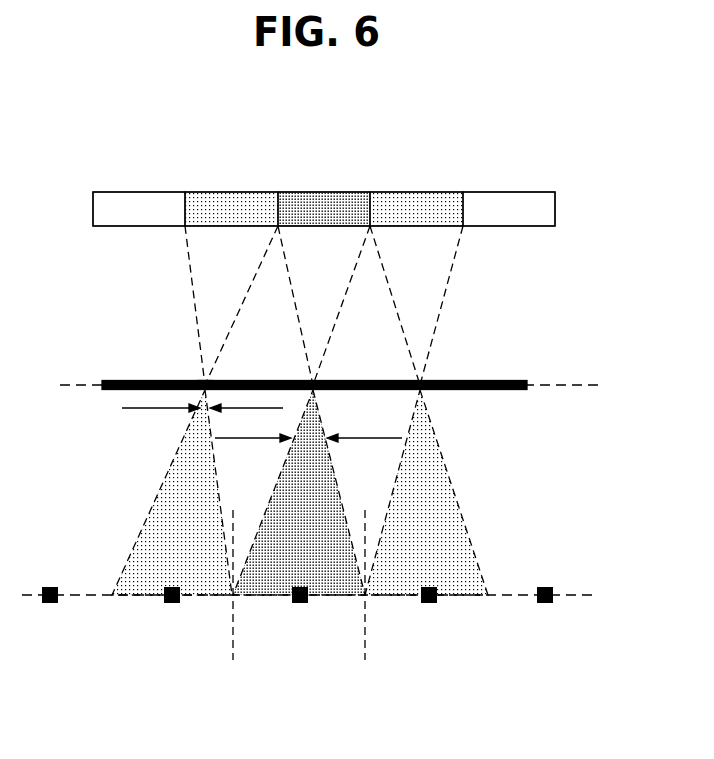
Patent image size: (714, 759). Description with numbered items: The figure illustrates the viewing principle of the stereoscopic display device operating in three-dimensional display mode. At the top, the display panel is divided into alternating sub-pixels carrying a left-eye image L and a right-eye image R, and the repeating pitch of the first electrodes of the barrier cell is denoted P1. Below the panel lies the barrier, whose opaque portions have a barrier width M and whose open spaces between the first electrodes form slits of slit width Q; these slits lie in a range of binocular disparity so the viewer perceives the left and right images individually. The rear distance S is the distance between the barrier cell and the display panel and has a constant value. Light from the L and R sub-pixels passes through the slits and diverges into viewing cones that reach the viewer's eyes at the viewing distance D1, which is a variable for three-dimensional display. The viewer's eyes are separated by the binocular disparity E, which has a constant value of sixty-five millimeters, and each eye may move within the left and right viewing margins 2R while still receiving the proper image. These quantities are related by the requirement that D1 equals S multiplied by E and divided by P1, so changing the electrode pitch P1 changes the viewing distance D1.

The pitch of the first electrodes P1 is at (324, 192).
The left-eye image L is at (324, 209).
The right-eye image R is at (324, 209).
The barrier width M is at (330, 368).
The slit width Q is at (208, 356).
The rear distance S is at (577, 234).
The viewing distance D1 is at (577, 394).
The binocular disparity E is at (241, 632).
The left and right viewing margins 2R is at (497, 635).